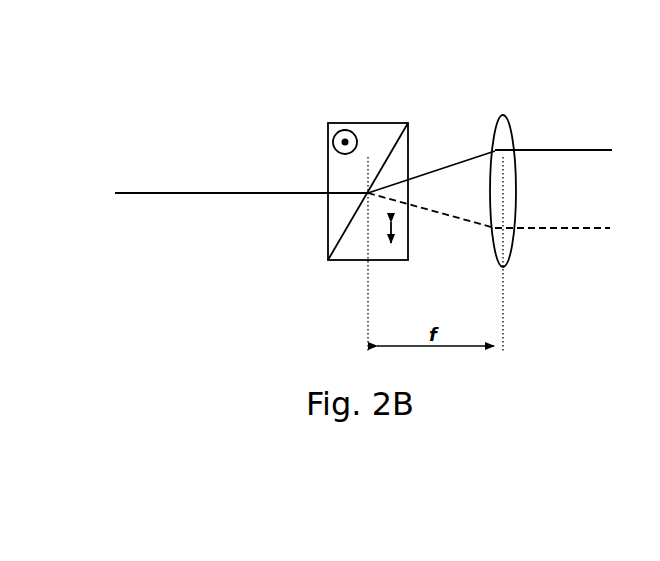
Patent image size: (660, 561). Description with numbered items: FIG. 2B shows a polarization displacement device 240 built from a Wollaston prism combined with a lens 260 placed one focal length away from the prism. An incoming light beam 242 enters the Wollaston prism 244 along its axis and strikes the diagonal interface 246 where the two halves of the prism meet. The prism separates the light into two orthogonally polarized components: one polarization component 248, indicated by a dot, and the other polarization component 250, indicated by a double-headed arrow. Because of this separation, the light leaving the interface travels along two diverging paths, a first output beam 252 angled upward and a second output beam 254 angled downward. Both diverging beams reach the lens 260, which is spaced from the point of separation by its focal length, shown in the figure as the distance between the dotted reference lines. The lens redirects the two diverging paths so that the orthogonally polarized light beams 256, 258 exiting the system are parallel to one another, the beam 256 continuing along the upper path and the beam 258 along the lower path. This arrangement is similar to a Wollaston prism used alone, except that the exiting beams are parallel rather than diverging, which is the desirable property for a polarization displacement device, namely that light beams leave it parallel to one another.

The optical system 240 is at (214, 127).
The input light beam 242 is at (133, 203).
The Wollaston prism 244 is at (337, 230).
The prism interface 246 is at (340, 267).
The first polarization component 248 is at (331, 127).
The second polarization component 250 is at (398, 235).
The first output beam 252 is at (473, 150).
The second output beam 254 is at (477, 232).
The orthogonally polarized light beam 256 is at (563, 145).
The orthogonally polarized light beam 258 is at (563, 232).
The lens 260 is at (513, 252).